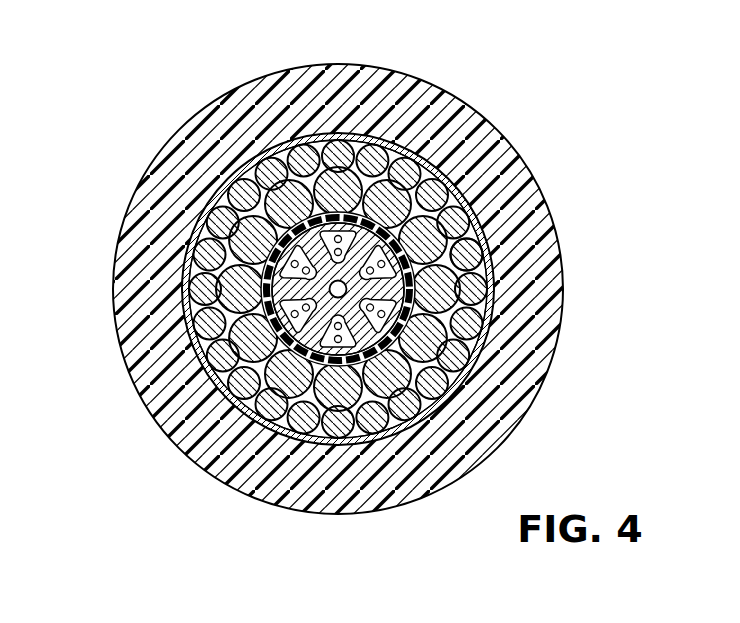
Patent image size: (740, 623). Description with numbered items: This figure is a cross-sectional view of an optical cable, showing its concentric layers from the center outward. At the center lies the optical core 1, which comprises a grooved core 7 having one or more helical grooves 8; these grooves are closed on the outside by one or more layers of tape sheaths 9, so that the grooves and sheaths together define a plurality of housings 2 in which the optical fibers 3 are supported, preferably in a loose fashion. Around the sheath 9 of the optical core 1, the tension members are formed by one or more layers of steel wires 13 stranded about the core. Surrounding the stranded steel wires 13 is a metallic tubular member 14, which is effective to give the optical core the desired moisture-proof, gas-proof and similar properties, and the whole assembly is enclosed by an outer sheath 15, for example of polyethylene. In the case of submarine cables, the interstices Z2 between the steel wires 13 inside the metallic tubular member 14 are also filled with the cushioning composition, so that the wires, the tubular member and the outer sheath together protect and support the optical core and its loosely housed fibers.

The optical core 1 is at (122, 178).
The housings 2 is at (345, 211).
The optical fibers 3 is at (337, 234).
The grooved core 7 is at (449, 260).
The helical grooves 8 is at (380, 233).
The tape sheaths 9 is at (416, 293).
The steel wires 13 is at (441, 378).
The metallic tubular member 14 is at (357, 444).
The outer sheath 15 is at (145, 375).
The interstices Z2 is at (192, 268).